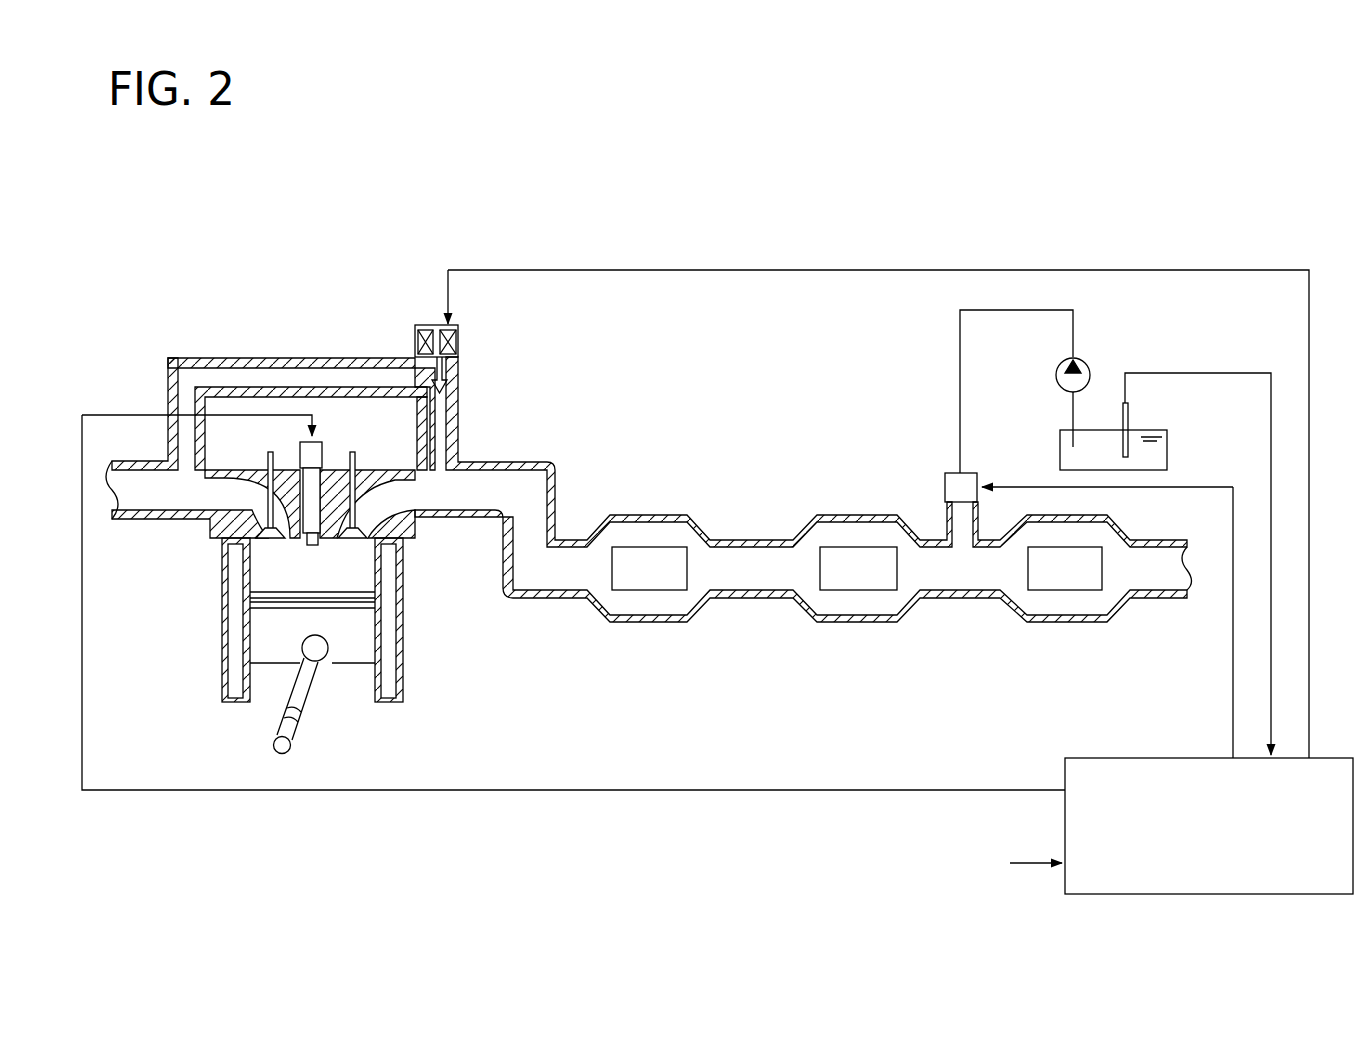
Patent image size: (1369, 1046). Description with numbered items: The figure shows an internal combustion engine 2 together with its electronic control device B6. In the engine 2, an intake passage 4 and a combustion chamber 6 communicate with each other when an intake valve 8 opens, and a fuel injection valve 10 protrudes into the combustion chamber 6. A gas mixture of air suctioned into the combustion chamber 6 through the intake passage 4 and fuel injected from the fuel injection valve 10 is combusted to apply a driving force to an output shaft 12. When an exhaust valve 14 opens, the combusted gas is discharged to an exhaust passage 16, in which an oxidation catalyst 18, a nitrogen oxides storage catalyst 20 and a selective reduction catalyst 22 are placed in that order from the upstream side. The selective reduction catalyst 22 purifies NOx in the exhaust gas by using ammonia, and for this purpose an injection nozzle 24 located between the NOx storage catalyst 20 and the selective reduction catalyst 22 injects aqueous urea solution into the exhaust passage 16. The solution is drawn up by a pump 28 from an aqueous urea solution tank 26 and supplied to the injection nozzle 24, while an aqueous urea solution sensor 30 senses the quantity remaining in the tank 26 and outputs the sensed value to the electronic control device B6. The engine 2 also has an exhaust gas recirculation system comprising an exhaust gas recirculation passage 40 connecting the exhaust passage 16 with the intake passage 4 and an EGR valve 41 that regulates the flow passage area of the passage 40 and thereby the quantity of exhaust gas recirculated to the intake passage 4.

The engine 2 is at (858, 237).
The intake passage 4 is at (162, 519).
The combustion chamber 6 is at (360, 567).
The intake valve 8 is at (268, 451).
The fuel injection valve 10 is at (322, 442).
The output shaft 12 is at (292, 748).
The exhaust valve 14 is at (355, 452).
The exhaust passage 16 is at (545, 598).
The oxidation catalyst 18 is at (645, 597).
The nitrogen oxides storage catalyst 20 is at (855, 597).
The selective reduction catalyst 22 is at (1060, 597).
The injection nozzle 24 is at (947, 473).
The aqueous urea solution tank 26 is at (1167, 450).
The pump 28 is at (1090, 364).
The aqueous urea solution sensor 30 is at (1130, 408).
The exhaust gas recirculation passage 40 is at (293, 364).
The exhaust gas recirculation valve 41 is at (468, 337).
The electronic control device B6 is at (1140, 758).